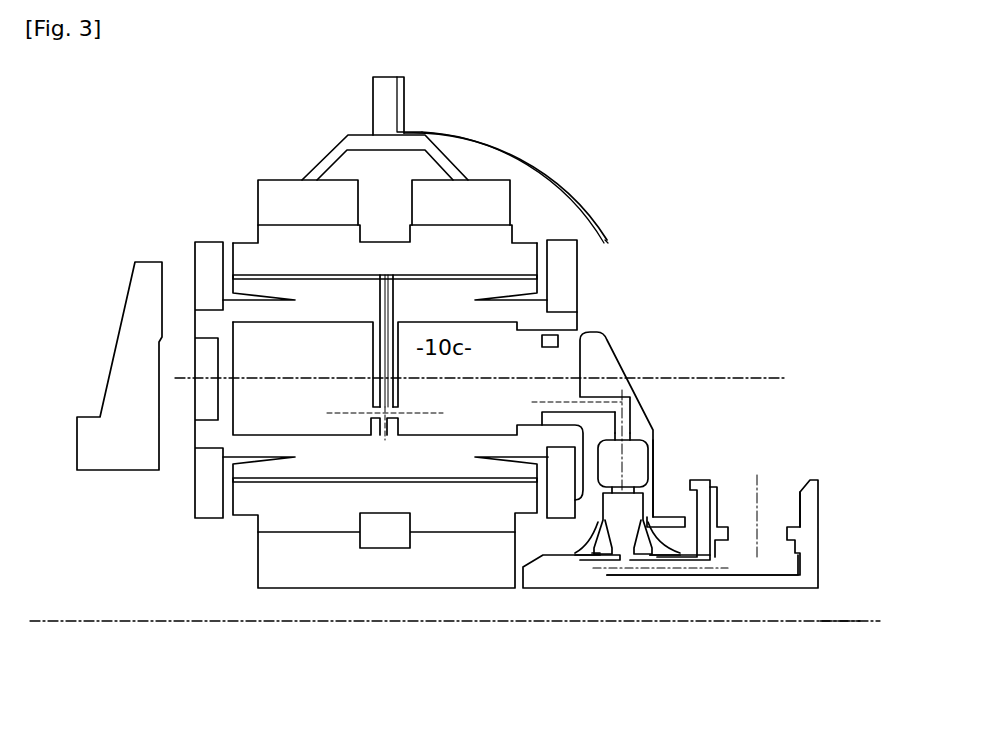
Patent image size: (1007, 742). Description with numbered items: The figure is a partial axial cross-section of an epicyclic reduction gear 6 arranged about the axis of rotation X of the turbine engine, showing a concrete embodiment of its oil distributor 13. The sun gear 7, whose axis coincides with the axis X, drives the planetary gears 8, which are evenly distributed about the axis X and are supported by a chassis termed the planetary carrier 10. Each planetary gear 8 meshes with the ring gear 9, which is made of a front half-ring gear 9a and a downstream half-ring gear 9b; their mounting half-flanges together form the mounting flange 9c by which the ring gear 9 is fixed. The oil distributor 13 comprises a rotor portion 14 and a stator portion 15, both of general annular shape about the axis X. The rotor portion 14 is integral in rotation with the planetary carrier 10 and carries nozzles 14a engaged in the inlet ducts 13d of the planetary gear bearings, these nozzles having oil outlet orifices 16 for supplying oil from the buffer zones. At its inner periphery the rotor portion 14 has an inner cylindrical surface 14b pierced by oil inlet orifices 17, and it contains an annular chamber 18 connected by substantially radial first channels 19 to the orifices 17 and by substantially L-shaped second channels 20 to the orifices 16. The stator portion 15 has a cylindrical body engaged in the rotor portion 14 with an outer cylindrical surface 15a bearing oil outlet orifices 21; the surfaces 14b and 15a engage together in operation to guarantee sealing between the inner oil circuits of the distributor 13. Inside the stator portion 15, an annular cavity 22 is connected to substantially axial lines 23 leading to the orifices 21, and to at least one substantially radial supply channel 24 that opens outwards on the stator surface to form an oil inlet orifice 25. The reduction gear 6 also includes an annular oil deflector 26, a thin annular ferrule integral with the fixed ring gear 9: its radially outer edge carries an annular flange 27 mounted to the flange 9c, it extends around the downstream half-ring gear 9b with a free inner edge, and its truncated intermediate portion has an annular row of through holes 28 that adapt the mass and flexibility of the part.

The reduction gear 6 is at (204, 150).
The sun gear 7 is at (239, 554).
The planetary gear 8 is at (229, 225).
The ring gear 9 is at (258, 147).
The front half-ring gear 9a is at (285, 192).
The downstream half-ring gear 9b is at (490, 195).
The mounting flange 9c is at (384, 93).
The planetary carrier 10 is at (597, 283).
The oil distributor 13 is at (548, 638).
The inlet duct 13d is at (560, 355).
The rotor portion 14 is at (678, 422).
The nozzle 14a is at (580, 405).
The inner cylindrical surface 14b is at (660, 565).
The stator portion 15 is at (765, 604).
The outer cylindrical surface 15a is at (632, 560).
The oil outlet orifice 16 is at (555, 415).
The oil inlet orifice 17 is at (618, 560).
The annular chamber 18 is at (637, 470).
The first channel 19 is at (628, 513).
The second channel 20 is at (640, 425).
The oil outlet orifice 21 is at (598, 550).
The annular cavity 22 is at (783, 562).
The line 23 is at (700, 585).
The supply channel 24 is at (790, 510).
The oil inlet orifice 25 is at (775, 490).
The annular oil deflector 26 is at (585, 159).
The annular flange 27 is at (405, 105).
The through hole 28 is at (608, 243).
The axis of rotation X is at (835, 612).